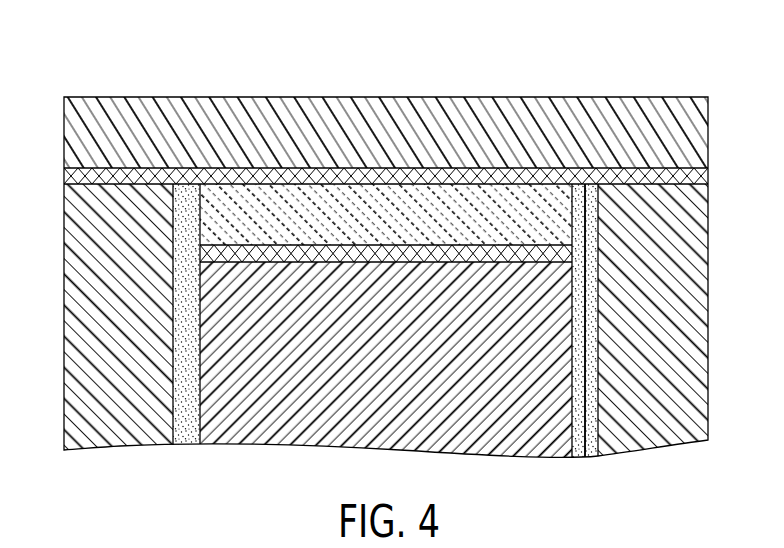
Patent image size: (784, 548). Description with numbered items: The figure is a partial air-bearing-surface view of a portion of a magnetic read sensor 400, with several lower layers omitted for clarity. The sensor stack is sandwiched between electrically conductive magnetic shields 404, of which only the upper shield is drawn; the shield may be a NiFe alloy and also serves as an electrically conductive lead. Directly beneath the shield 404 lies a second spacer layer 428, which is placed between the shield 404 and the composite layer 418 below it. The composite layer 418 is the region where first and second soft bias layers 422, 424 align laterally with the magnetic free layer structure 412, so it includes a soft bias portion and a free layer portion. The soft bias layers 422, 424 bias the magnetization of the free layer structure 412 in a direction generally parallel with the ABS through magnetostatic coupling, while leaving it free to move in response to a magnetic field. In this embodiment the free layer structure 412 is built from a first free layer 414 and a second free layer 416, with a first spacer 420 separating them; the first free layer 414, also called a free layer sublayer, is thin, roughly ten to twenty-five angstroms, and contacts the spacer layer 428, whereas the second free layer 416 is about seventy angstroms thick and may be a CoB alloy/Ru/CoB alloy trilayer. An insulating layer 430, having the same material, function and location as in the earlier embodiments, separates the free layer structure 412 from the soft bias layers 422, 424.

The magnetic read sensor 400 is at (46, 76).
The magnetic shield 404 is at (693, 136).
The spacer layer 428 is at (693, 176).
The composite layer 418 is at (59, 183).
The soft bias layer 424 is at (122, 425).
The insulating layer 430 is at (187, 427).
The first free layer 414 is at (292, 217).
The first spacer 420 is at (400, 255).
The second free layer 416 is at (282, 427).
The soft bias layer 422 is at (693, 387).
The magnetic free layer structure 412 is at (588, 322).